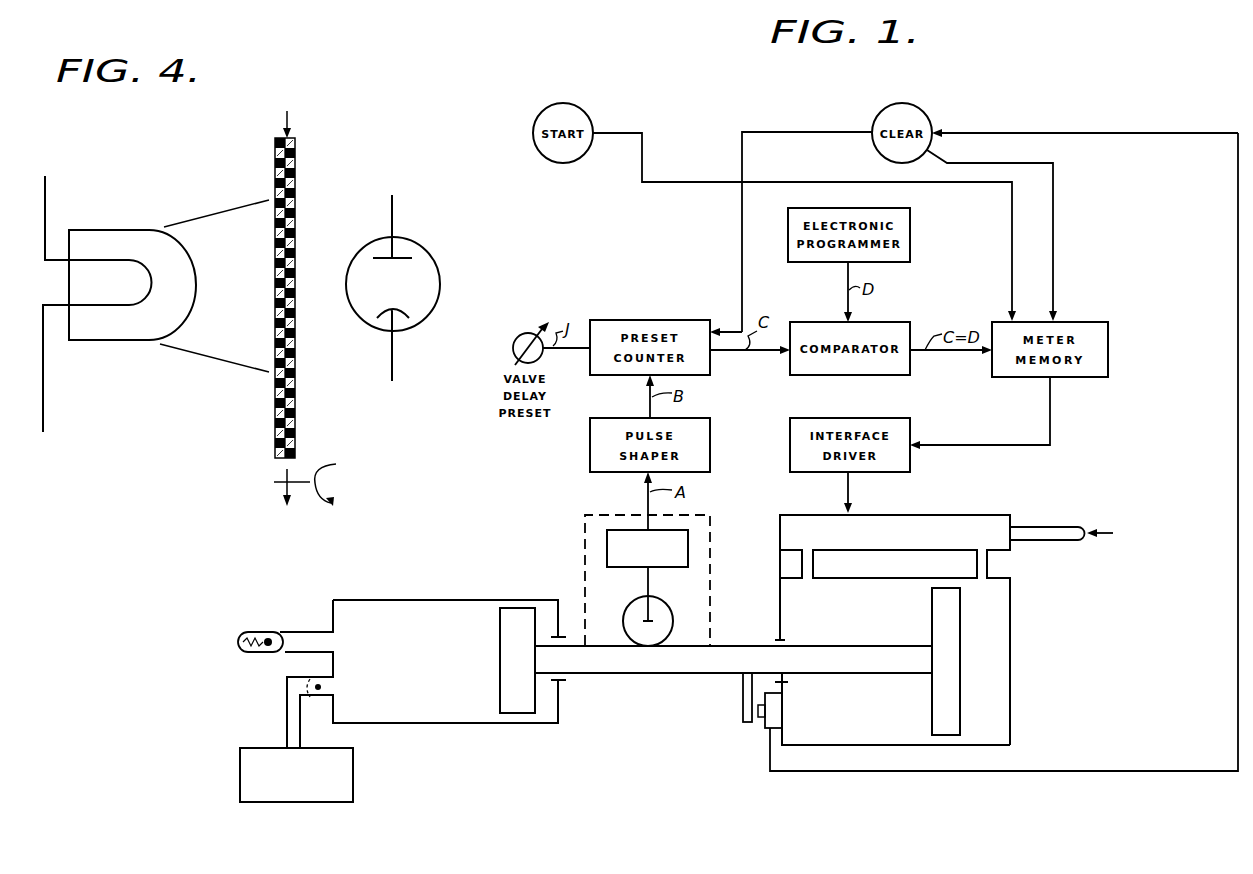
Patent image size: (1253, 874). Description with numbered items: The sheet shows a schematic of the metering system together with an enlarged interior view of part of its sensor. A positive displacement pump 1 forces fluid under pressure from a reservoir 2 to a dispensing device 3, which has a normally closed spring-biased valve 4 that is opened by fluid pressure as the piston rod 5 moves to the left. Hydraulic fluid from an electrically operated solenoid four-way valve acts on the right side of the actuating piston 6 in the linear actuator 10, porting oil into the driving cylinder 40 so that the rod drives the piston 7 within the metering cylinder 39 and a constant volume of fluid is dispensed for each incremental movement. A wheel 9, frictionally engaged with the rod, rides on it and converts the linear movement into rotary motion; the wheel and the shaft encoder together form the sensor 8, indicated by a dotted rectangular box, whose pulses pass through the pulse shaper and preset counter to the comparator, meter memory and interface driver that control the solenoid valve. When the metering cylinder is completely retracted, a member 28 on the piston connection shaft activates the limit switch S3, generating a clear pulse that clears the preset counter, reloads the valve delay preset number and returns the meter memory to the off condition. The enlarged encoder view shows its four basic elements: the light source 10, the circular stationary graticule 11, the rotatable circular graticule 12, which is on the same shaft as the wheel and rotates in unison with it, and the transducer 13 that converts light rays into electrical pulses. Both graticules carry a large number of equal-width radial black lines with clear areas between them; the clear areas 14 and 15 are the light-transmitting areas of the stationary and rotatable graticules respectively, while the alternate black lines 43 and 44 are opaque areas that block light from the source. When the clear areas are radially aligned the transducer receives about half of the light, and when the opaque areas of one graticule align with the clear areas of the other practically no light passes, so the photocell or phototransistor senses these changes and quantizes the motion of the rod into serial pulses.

In FIG. 1, the positive displacement pump 1 is at (530, 737).
In FIG. 1, the reservoir 2 is at (317, 803).
In FIG. 1, the dispensing device 3 is at (262, 632).
In FIG. 1, the spring-biased valve 4 is at (268, 646).
In FIG. 1, the piston rod 5 is at (617, 674).
In FIG. 1, the actuating piston 6 is at (960, 625).
In FIG. 1, the piston 7 is at (498, 700).
In FIG. 1, the sensor 8 is at (585, 540).
In FIG. 1, the wheel 9 is at (673, 613).
In FIG. 4, the linear actuator 10 is at (132, 305).
In FIG. 1, the linear actuator 10 is at (1023, 702).
In FIG. 4, the stationary graticule 11 is at (275, 399).
In FIG. 4, the rotatable circular graticule 12 is at (297, 346).
In FIG. 4, the transducer 13 is at (440, 297).
In FIG. 4, the clear areas 14 is at (275, 338).
In FIG. 4, the clear areas 15 is at (297, 197).
In FIG. 1, the member 28 is at (743, 693).
In FIG. 1, the metering cylinder 39 is at (408, 600).
In FIG. 1, the driving cylinder 40 is at (875, 747).
In FIG. 4, the black lines 43 is at (275, 168).
In FIG. 4, the black lines 44 is at (295, 166).
In FIG. 1, the limit switch S3 is at (777, 728).